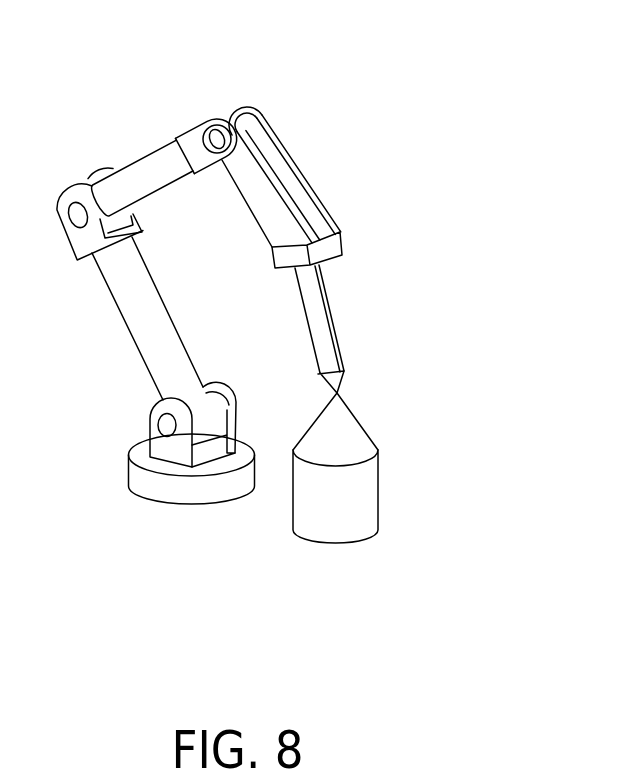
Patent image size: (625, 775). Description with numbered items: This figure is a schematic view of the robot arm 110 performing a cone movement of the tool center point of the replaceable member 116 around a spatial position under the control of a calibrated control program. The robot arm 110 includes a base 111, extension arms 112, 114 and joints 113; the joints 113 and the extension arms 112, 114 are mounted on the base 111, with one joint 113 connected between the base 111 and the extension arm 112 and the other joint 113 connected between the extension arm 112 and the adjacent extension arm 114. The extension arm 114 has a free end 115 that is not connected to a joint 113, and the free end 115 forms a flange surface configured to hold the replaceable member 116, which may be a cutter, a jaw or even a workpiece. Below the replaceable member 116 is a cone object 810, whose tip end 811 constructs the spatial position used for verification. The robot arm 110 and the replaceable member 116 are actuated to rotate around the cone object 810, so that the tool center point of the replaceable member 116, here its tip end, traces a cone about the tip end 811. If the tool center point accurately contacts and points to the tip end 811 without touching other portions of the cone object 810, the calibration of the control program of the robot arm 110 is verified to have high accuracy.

The robot arm 110 is at (126, 97).
The base 111 is at (172, 487).
The extension arm 112 is at (137, 173).
The joint 113 is at (215, 139).
The extension arm 114 is at (277, 152).
The free end 115 is at (333, 245).
The replaceable member 116 is at (315, 322).
The cone object 810 is at (358, 507).
The tip end 811 is at (337, 393).